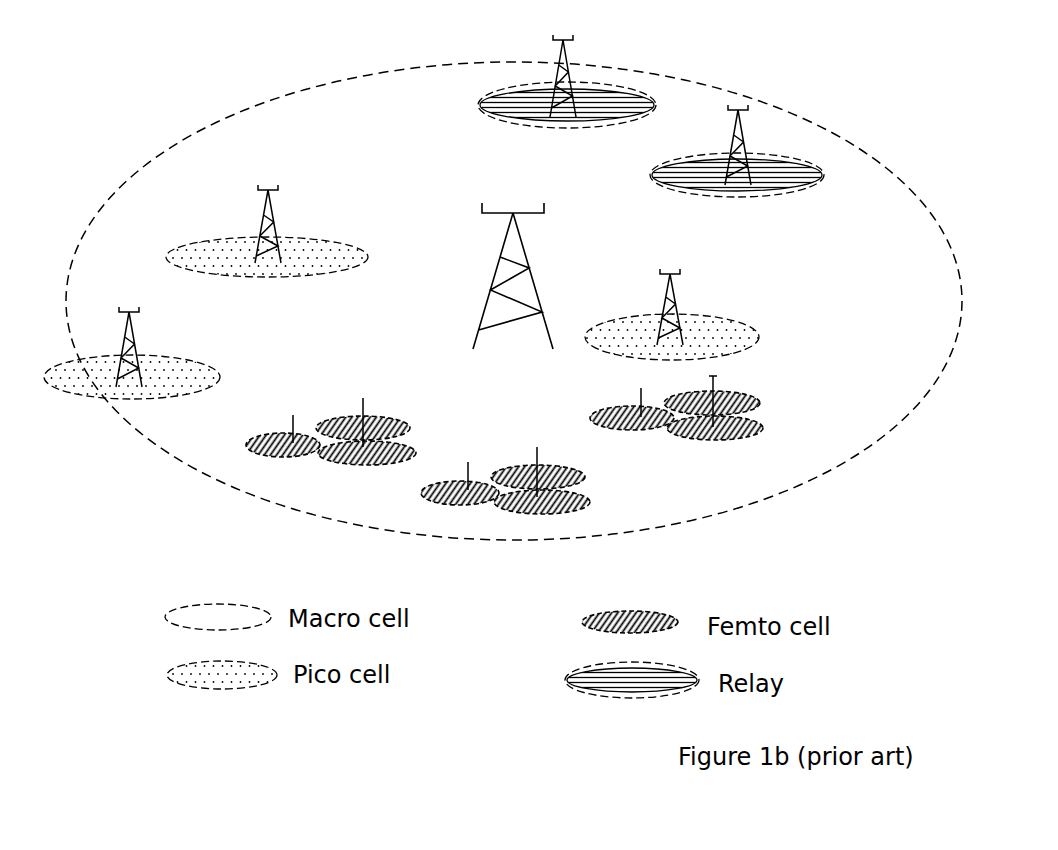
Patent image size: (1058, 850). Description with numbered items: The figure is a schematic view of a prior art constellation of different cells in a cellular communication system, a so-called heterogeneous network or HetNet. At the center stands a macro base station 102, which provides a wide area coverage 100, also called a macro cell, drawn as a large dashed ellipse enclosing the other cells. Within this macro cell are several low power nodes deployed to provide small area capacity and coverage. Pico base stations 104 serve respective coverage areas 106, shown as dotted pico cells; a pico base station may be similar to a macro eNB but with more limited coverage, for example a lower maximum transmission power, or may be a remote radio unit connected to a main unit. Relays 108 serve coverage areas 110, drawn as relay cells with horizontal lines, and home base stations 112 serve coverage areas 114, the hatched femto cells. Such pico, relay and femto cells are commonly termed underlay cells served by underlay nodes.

The wide area coverage 100 is at (287, 97).
The macro base station 102 is at (470, 307).
The pico base station 104 is at (278, 222).
The coverage area of pico base station 106 is at (212, 276).
The relay 108 is at (753, 128).
The coverage area of relay 110 is at (745, 198).
The home base station 112 is at (713, 378).
The coverage area of home base station 114 is at (762, 413).